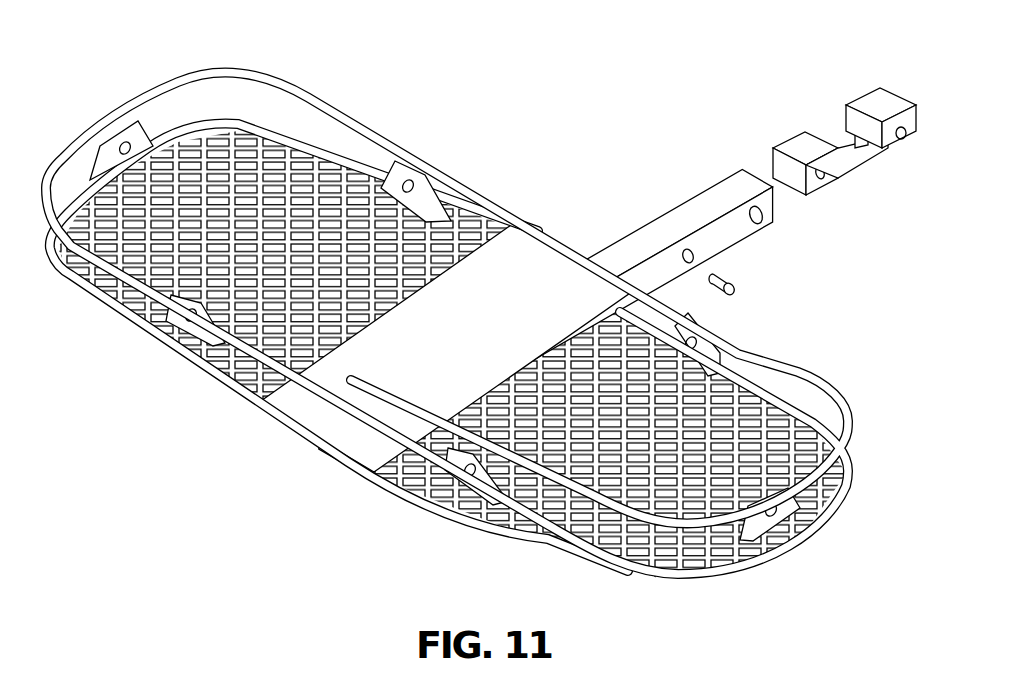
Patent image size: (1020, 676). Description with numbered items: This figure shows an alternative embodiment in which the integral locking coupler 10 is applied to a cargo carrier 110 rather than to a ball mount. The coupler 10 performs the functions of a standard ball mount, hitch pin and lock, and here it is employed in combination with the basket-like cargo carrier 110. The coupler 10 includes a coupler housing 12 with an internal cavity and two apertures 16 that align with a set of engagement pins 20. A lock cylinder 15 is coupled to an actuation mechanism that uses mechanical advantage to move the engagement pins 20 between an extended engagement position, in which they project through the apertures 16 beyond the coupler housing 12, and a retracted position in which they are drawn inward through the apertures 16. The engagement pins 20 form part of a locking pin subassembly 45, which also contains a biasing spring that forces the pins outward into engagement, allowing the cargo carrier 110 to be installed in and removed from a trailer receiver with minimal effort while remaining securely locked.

The coupler 10 is at (711, 118).
The coupler housing 12 is at (625, 218).
The lock cylinder 15 is at (735, 282).
The aperture 16 is at (752, 214).
The engagement pin 20 is at (897, 135).
The locking pin subassembly 45 is at (858, 90).
The cargo carrier 110 is at (170, 322).